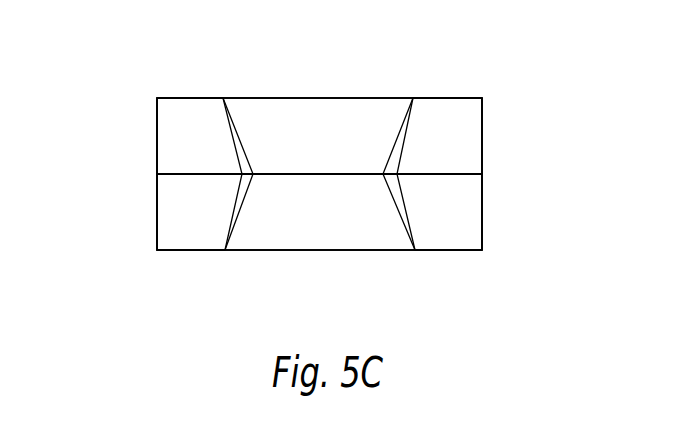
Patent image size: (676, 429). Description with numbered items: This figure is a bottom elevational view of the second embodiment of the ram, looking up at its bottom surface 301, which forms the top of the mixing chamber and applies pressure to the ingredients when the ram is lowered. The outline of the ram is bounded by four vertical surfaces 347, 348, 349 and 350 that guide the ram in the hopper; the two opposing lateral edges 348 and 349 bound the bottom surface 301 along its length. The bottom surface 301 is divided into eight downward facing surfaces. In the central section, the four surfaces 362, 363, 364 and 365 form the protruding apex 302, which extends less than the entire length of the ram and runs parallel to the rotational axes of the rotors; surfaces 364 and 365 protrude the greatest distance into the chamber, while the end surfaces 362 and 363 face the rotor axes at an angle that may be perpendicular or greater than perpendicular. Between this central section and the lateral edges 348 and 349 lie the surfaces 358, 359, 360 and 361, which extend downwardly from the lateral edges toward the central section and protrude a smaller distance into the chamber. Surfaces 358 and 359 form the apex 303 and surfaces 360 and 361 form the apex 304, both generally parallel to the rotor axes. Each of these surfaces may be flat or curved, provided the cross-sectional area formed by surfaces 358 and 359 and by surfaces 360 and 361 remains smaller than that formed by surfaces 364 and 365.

The bottom surface 301 is at (147, 92).
The protruding apex 302 is at (355, 174).
The apex 303 is at (450, 176).
The apex 304 is at (180, 176).
The vertical surface 347 is at (258, 98).
The vertical surface 348 is at (482, 108).
The vertical surface 349 is at (157, 113).
The vertical surface 350 is at (470, 250).
The downward facing surface 358 is at (437, 117).
The downward facing surface 359 is at (442, 210).
The downward facing surface 360 is at (190, 122).
The downward facing surface 361 is at (193, 215).
The downward facing surface 362 is at (393, 157).
The downward facing surface 363 is at (240, 158).
The downward facing surface 364 is at (328, 122).
The downward facing surface 365 is at (325, 213).